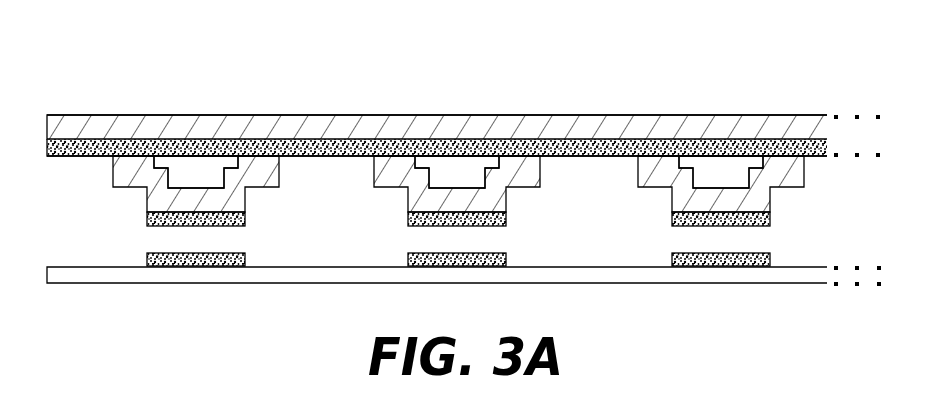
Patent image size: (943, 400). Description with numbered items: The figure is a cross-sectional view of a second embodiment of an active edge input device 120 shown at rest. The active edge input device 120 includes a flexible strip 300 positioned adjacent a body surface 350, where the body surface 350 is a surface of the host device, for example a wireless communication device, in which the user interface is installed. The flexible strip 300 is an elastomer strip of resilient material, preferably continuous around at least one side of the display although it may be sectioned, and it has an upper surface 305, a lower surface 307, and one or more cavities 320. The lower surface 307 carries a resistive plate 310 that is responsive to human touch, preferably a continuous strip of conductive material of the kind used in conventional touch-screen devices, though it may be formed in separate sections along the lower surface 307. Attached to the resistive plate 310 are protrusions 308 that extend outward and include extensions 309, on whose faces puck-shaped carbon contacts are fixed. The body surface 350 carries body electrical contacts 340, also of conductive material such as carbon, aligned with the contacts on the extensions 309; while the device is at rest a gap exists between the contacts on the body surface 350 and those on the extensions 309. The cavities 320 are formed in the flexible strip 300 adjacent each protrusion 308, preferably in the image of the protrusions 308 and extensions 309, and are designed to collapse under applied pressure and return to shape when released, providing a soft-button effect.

The active edge input device 120 is at (601, 81).
The flexible strip 300 is at (655, 123).
The upper surface 305 is at (78, 114).
The lower surface 307 is at (96, 157).
The protrusions 308 is at (112, 186).
The extensions 309 is at (242, 203).
The resistive plate 310 is at (90, 150).
The cavities 320 is at (188, 165).
The body electrical contacts 340 is at (183, 267).
The body surface 350 is at (263, 272).